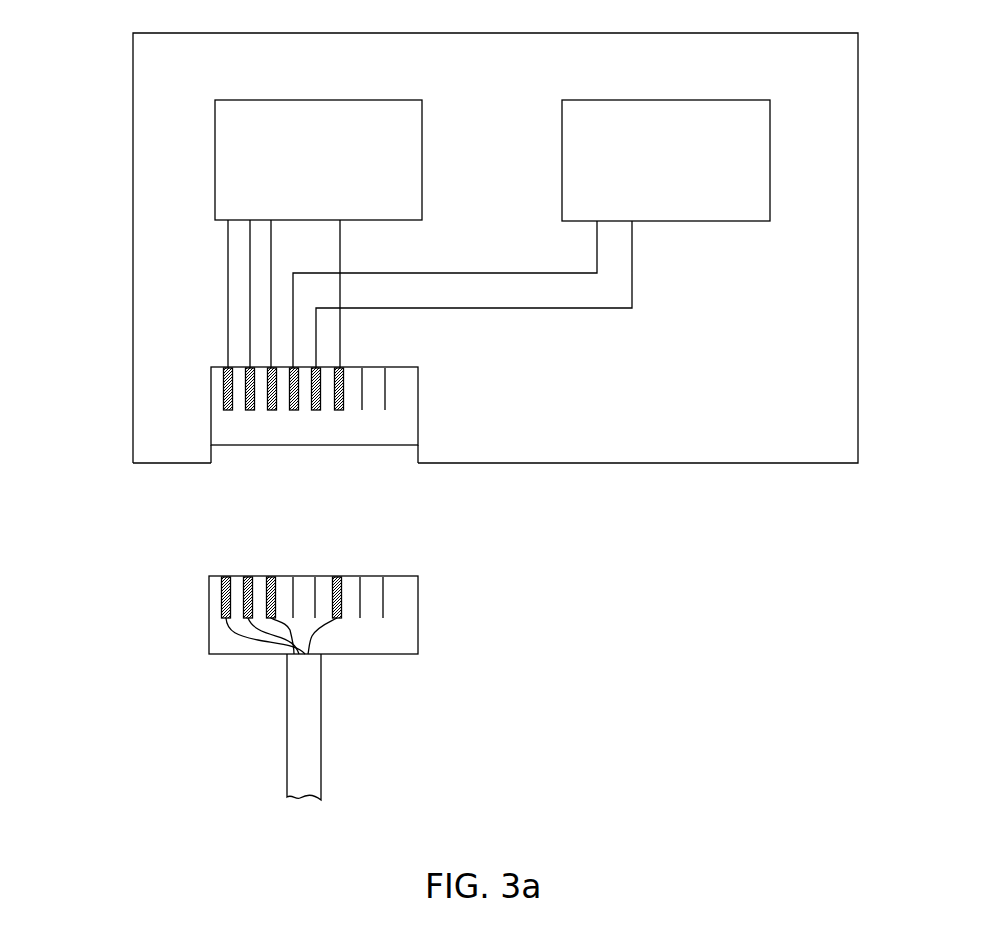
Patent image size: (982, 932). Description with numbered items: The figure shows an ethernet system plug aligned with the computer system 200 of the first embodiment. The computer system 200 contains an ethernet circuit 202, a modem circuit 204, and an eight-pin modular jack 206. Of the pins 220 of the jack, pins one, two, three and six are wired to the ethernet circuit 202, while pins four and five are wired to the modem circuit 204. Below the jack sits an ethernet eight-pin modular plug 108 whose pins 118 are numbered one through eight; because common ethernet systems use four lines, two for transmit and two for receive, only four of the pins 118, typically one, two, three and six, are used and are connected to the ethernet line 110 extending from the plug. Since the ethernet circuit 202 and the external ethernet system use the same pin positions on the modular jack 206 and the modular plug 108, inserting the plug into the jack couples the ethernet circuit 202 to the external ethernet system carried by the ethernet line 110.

The computer system 200 is at (133, 202).
The ethernet circuit 202 is at (388, 203).
The modem circuit 204 is at (735, 203).
The 8-pin modular jack 206 is at (418, 398).
The pins 220 is at (306, 472).
The pins 118 is at (312, 541).
The ethernet 8-pin modular plug 108 is at (209, 606).
The ethernet line 110 is at (287, 726).